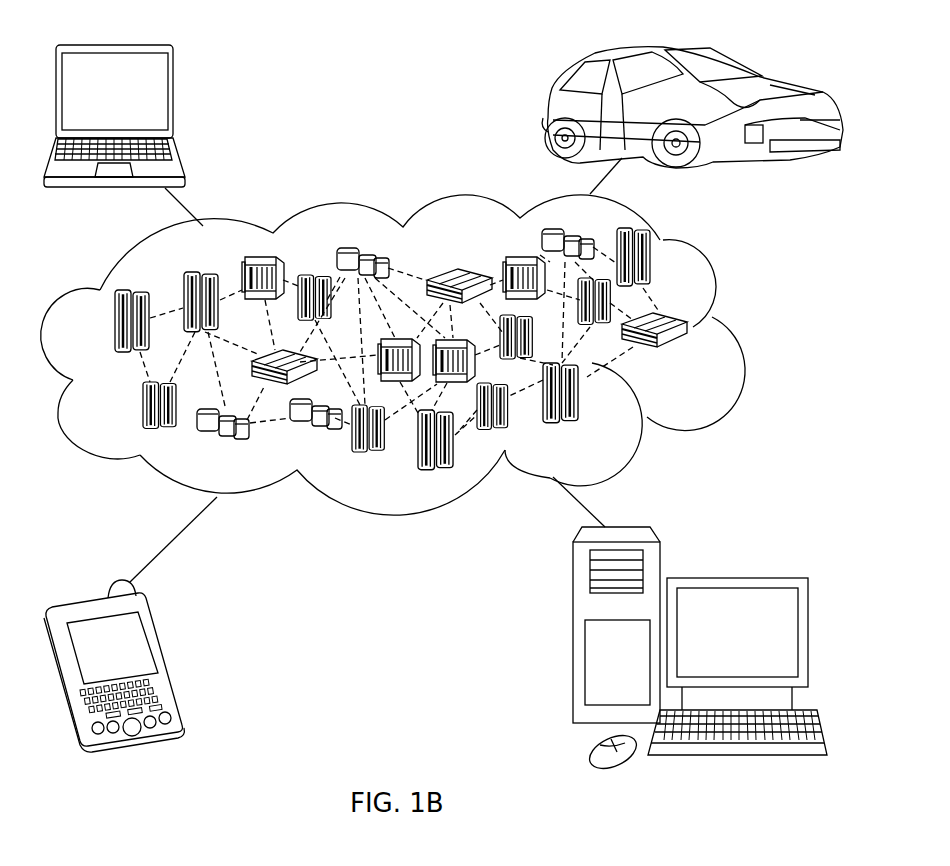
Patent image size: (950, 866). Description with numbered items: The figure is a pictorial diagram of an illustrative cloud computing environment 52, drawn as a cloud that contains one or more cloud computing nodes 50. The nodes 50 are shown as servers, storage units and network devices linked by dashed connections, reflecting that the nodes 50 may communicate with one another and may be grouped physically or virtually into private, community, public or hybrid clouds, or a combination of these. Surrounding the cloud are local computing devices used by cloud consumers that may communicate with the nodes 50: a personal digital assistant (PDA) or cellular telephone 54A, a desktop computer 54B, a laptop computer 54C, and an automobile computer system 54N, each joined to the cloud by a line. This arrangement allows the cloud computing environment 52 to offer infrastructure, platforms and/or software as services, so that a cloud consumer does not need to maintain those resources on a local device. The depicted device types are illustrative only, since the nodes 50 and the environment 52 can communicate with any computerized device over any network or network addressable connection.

The cloud computing nodes 50 is at (733, 256).
The cloud computing environment 52 is at (737, 326).
The personal digital assistant (PDA) or cellular telephone 54A is at (164, 655).
The desktop computer 54B is at (736, 578).
The laptop computer 54C is at (173, 98).
The automobile computer system 54N is at (550, 110).